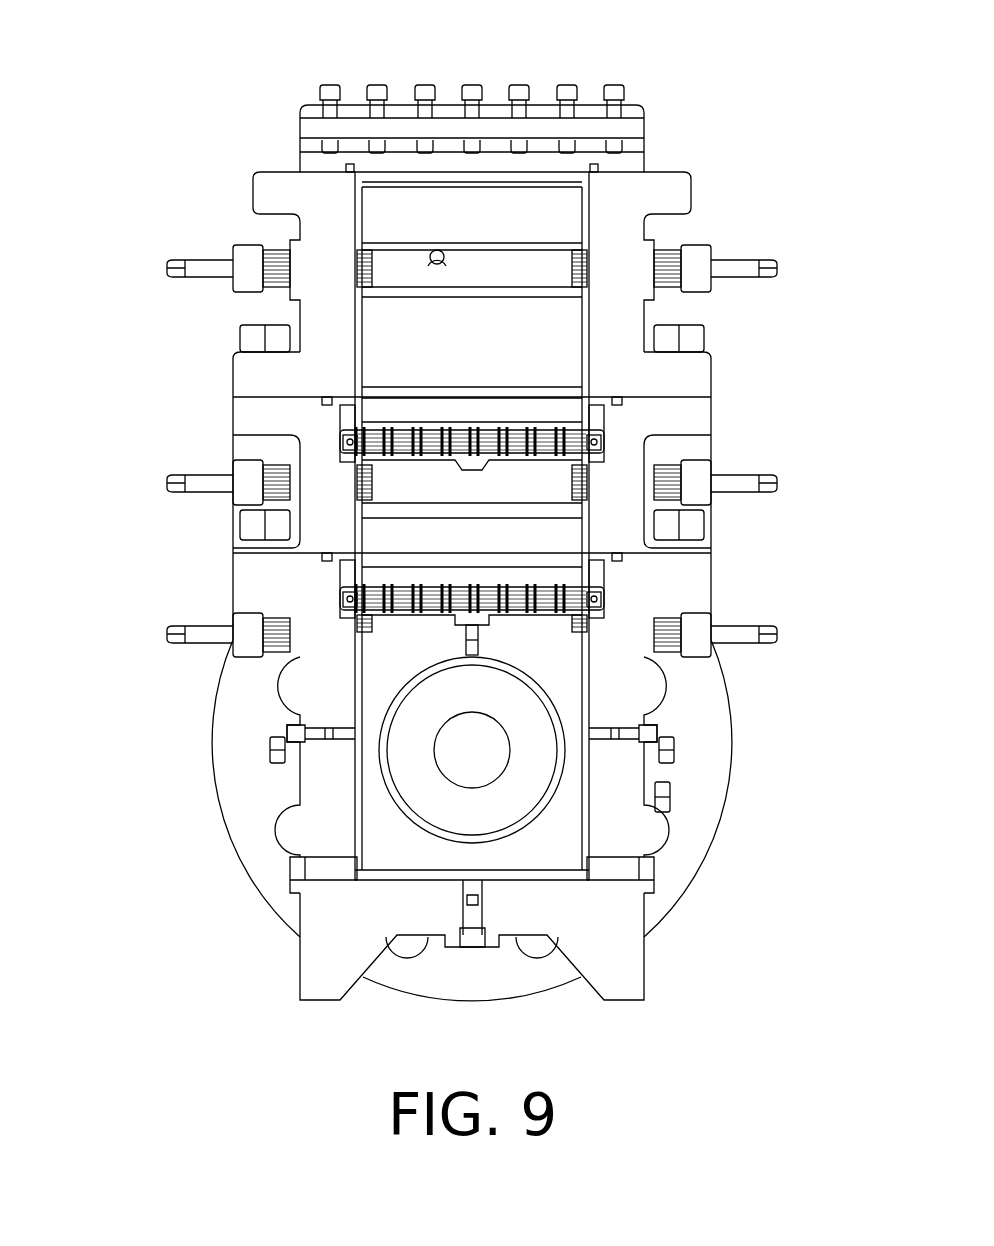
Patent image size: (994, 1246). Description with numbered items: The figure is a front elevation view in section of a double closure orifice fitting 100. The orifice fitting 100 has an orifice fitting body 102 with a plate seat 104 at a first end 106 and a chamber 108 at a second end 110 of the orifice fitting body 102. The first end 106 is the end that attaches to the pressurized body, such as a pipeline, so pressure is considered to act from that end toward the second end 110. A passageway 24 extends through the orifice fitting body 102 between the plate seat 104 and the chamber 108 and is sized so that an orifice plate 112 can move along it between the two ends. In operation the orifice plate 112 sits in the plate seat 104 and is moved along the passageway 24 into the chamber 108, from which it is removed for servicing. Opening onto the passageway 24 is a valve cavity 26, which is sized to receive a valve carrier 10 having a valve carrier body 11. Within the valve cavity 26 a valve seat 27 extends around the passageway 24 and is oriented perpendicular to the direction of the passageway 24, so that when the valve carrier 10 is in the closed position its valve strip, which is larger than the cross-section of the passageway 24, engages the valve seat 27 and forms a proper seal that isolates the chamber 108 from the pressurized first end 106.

The double closure orifice fitting 100 is at (190, 140).
The valve seat 27 is at (480, 238).
The second end 110 is at (380, 185).
The chamber 108 is at (382, 218).
The valve cavity 26 is at (537, 255).
The passageway 24 is at (478, 347).
The valve carrier 10 is at (425, 445).
The valve carrier body 11 is at (538, 455).
The orifice fitting body 102 is at (322, 665).
The plate seat 104 is at (355, 762).
The first end 106 is at (378, 883).
The orifice plate 112 is at (518, 803).